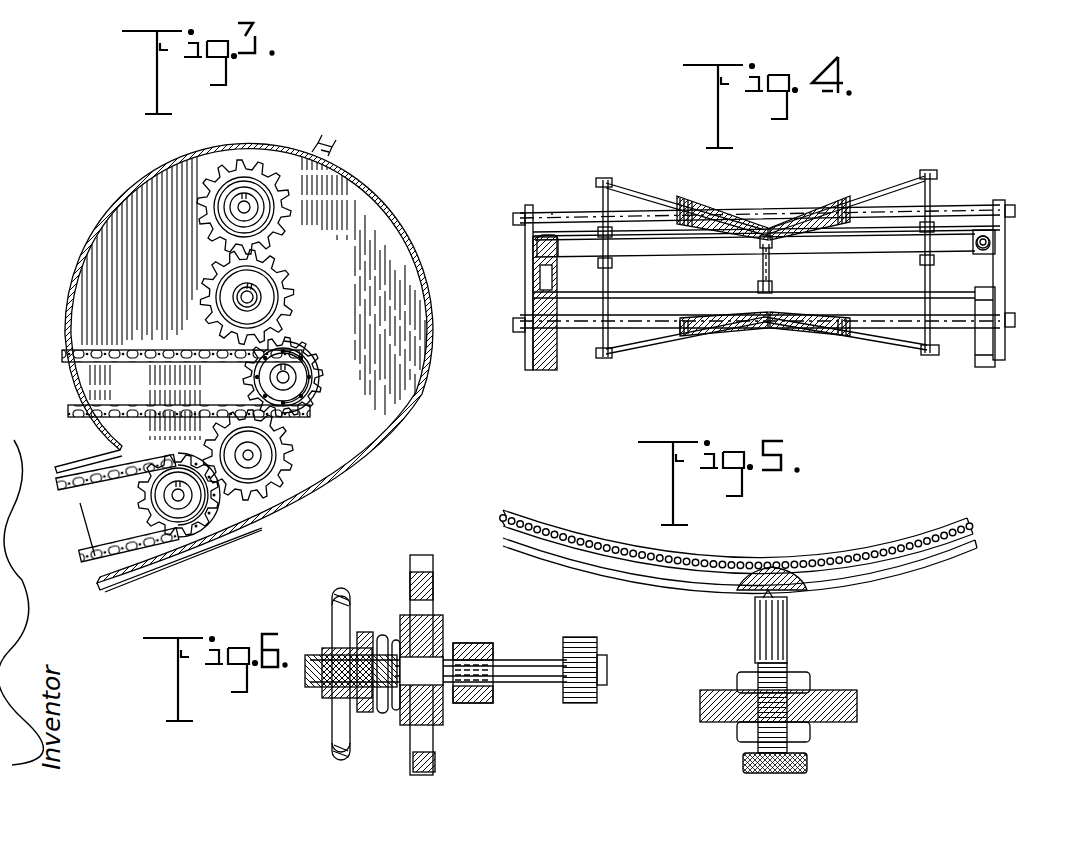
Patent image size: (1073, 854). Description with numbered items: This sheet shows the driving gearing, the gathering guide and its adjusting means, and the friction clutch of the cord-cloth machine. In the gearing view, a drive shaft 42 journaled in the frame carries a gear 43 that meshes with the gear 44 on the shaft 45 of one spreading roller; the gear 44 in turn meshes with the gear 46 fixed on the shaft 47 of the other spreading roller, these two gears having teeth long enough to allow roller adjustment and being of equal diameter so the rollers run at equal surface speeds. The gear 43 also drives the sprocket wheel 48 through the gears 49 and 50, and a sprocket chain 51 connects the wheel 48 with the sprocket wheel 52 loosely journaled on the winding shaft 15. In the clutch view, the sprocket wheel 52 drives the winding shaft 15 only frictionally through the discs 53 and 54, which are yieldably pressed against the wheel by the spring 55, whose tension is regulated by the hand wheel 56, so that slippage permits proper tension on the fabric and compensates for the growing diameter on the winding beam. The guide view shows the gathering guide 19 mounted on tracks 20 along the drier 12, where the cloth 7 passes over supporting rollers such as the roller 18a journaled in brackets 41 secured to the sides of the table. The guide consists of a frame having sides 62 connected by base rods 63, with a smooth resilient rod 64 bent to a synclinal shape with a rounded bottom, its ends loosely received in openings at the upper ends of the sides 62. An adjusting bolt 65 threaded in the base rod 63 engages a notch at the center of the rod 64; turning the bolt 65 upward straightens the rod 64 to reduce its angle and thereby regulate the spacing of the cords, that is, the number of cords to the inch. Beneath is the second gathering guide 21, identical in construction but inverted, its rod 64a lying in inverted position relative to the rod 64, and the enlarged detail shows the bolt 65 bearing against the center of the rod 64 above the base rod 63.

In FIG. 4, the cloth 7 is at (728, 216).
In FIG. 4, the drier 12 is at (556, 270).
In FIG. 6, the winding shaft 15 is at (520, 665).
In FIG. 4, the supporting roller 18a is at (552, 213).
In FIG. 4, the gathering guide 19 is at (675, 187).
In FIG. 4, the tracks 20 is at (598, 235).
In FIG. 4, the second gathering guide 21 is at (896, 355).
In FIG. 4, the brackets 41 is at (538, 308).
In FIG. 3, the drive shaft 42 is at (296, 350).
In FIG. 3, the gear 43 is at (312, 352).
In FIG. 3, the gear 44 is at (284, 274).
In FIG. 3, the shaft 45 is at (245, 300).
In FIG. 3, the gear 46 is at (268, 204).
In FIG. 3, the shaft 47 is at (250, 200).
In FIG. 3, the sprocket wheel 48 is at (152, 519).
In FIG. 3, the gear 49 is at (294, 452).
In FIG. 3, the gear 50 is at (145, 493).
In FIG. 3, the sprocket chain 51 is at (96, 570).
In FIG. 6, the sprocket wheel 52 is at (415, 588).
In FIG. 6, the disc 53 is at (440, 625).
In FIG. 6, the disc 54 is at (402, 623).
In FIG. 6, the spring 55 is at (402, 715).
In FIG. 6, the hand wheel 56 is at (332, 593).
In FIG. 4, the sides 62 is at (603, 197).
In FIG. 4, the base rod 63 is at (880, 210).
In FIG. 5, the base rod 63 is at (823, 703).
In FIG. 4, the resilient rod 64 is at (860, 193).
In FIG. 5, the resilient rod 64 is at (866, 512).
In FIG. 4, the rod 64a is at (653, 347).
In FIG. 4, the adjusting bolt 65 is at (757, 267).
In FIG. 5, the adjusting bolt 65 is at (770, 627).